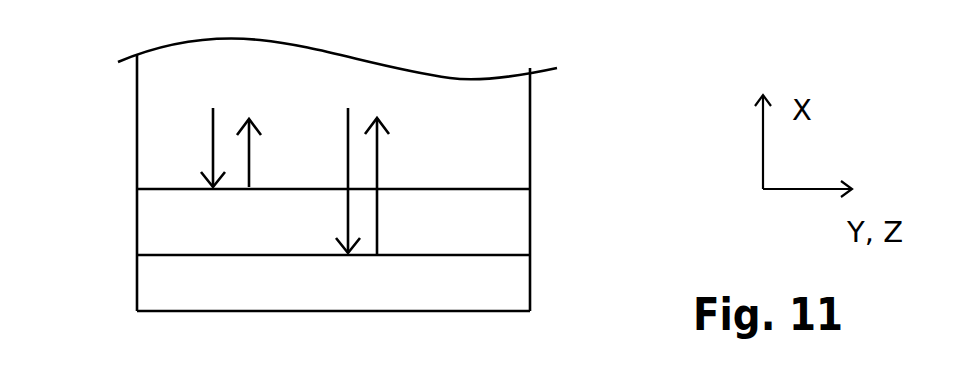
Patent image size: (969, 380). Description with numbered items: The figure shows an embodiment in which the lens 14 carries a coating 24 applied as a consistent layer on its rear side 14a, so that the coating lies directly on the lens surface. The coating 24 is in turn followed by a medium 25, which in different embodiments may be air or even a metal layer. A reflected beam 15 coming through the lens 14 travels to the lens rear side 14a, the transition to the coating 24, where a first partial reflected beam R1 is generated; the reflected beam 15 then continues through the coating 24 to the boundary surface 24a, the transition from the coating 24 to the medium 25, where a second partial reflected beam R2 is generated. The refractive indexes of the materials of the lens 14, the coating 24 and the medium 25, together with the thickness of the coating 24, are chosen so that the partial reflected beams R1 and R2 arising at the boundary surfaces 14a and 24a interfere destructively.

The lens 14 is at (151, 160).
The coating 24 is at (168, 227).
The medium 25 is at (153, 288).
The lens rear side 14a is at (478, 190).
The boundary surface of the coating 24a is at (500, 254).
The reflected beam 15 is at (275, 159).
The first partial reflected beam R1 is at (257, 131).
The second partial reflected beam R2 is at (394, 173).